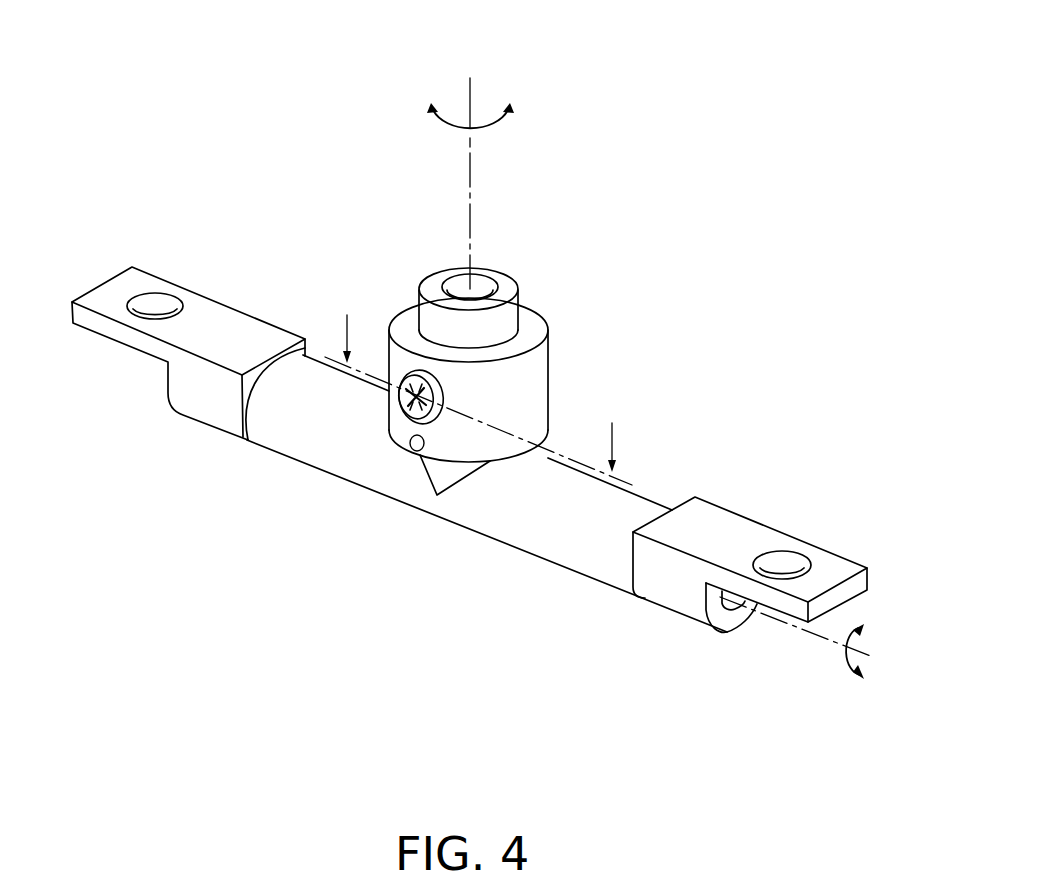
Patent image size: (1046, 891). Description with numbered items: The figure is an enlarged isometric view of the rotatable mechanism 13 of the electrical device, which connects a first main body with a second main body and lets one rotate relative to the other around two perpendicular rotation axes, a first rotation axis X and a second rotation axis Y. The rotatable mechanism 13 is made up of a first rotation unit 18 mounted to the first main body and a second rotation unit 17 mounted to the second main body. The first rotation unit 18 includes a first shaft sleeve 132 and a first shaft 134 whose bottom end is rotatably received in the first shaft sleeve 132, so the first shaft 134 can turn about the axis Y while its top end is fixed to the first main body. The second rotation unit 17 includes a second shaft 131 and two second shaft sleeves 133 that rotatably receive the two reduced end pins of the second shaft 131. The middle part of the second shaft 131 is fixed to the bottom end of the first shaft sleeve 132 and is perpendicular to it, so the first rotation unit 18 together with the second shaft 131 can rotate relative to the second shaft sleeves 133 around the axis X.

The rotatable mechanism 13 is at (523, 55).
The second rotation unit 17 is at (483, 627).
The first rotation unit 18 is at (407, 153).
The second shaft 131 is at (512, 518).
The first shaft sleeve 132 is at (403, 318).
The second shaft sleeve 133 is at (703, 533).
The first shaft 134 is at (457, 270).